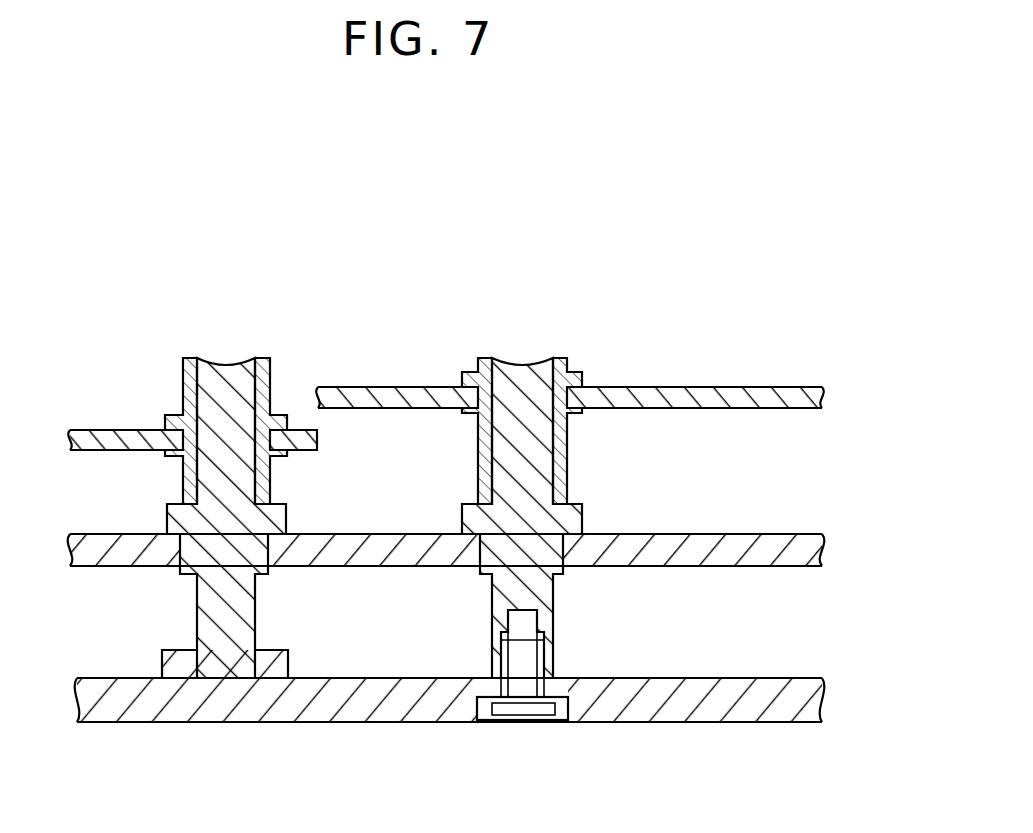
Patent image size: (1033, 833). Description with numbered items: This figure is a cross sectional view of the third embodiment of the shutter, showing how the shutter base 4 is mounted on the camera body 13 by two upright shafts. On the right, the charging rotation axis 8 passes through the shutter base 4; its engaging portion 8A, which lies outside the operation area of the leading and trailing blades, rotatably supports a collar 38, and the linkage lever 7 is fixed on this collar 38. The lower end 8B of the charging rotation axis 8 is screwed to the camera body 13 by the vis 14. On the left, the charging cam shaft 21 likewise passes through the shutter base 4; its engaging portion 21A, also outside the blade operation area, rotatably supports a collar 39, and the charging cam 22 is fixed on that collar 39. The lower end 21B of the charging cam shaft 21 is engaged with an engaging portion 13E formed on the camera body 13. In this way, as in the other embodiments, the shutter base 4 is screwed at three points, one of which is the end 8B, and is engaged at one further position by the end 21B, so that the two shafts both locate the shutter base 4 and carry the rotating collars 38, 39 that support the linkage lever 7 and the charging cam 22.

The shutter base 4 is at (745, 533).
The linkage lever 7 is at (695, 387).
The charging rotation axis 8 is at (560, 472).
The engaging portion 8A is at (538, 368).
The end 8B is at (548, 627).
The camera body 13 is at (450, 702).
The engaging portion 13E is at (290, 655).
The vis 14 is at (540, 715).
The charging cam shaft 21 is at (176, 472).
The engaging portion 21A is at (232, 365).
The end 21B is at (200, 613).
The charging cam 22 is at (128, 435).
The collar 38 is at (568, 453).
The collar 39 is at (270, 474).